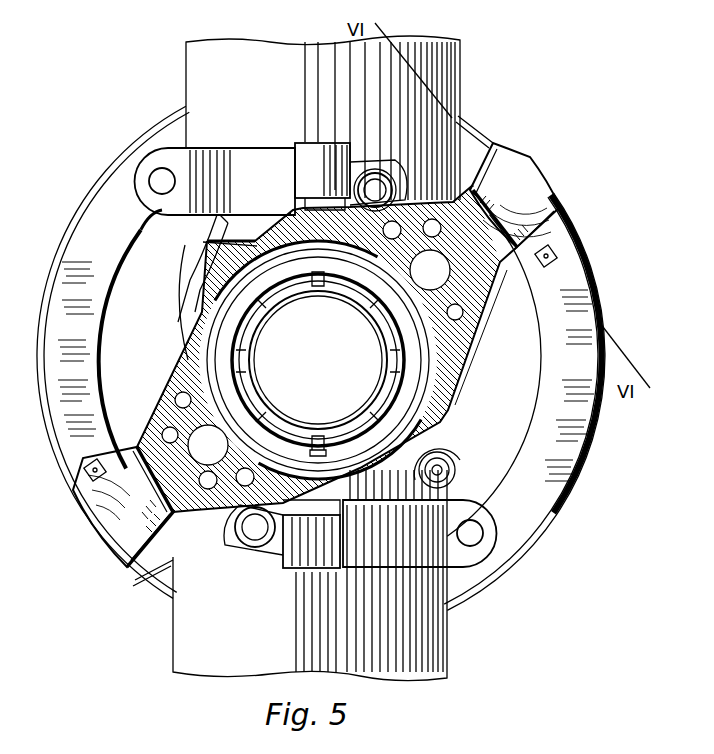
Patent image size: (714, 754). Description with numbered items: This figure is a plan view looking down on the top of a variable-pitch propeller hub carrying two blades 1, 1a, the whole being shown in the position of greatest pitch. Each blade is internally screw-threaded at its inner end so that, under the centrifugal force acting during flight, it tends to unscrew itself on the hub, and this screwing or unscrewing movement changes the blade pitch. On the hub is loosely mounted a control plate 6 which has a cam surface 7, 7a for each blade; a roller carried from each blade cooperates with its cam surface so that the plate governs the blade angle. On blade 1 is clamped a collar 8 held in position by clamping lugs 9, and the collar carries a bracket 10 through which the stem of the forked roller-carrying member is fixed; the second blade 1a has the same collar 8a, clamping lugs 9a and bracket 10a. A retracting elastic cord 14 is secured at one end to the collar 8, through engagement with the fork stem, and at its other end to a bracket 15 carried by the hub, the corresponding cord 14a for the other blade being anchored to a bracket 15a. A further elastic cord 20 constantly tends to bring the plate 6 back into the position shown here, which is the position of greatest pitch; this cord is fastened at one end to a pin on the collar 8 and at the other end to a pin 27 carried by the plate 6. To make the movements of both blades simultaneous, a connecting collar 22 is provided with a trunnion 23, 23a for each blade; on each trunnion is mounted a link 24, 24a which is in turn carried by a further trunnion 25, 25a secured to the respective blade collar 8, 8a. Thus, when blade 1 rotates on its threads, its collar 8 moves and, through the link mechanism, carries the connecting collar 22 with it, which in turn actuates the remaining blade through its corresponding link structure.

The propeller blade 1 is at (455, 72).
The propeller blade 1a is at (450, 645).
The control plate 6 is at (535, 542).
The cam surface 7 is at (580, 262).
The cam surface 7a is at (70, 458).
The collar 8 is at (245, 148).
The collar 8a is at (212, 558).
The clamping lugs 9 is at (140, 155).
The clamping lugs 9a is at (495, 560).
The bracket 10 is at (470, 155).
The bracket 10a is at (172, 555).
The elastic cord 14 is at (540, 178).
The elastic cord 14a is at (110, 538).
The bracket 15 is at (402, 163).
The bracket 15a is at (232, 545).
The elastic cord 20 is at (178, 312).
The connecting collar 22 is at (223, 267).
The trunnion 23 is at (320, 143).
The trunnion 23a is at (311, 541).
The link 24 is at (370, 165).
The link 24a is at (290, 560).
The trunnion 25 is at (380, 176).
The trunnion 25a is at (255, 548).
The pin 27 is at (450, 468).